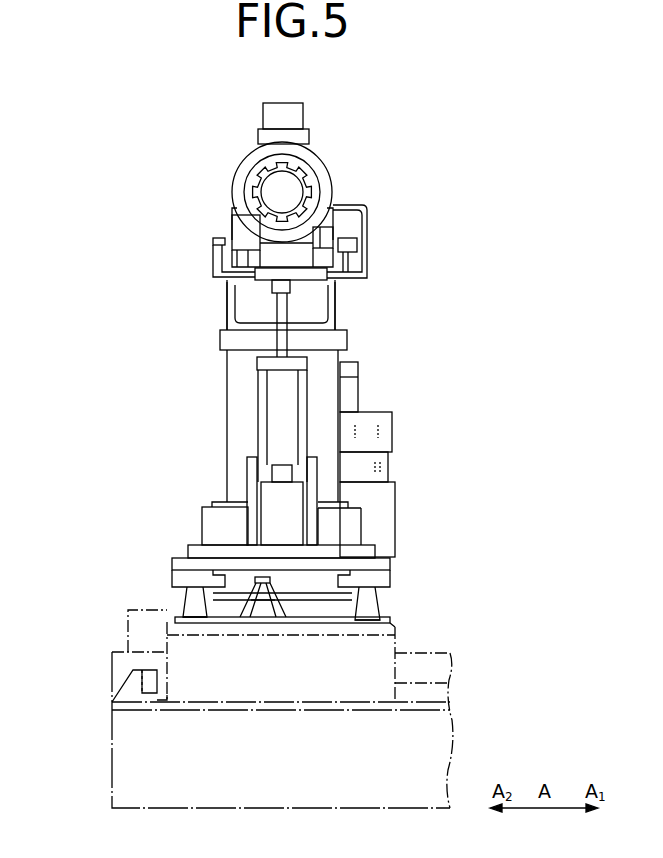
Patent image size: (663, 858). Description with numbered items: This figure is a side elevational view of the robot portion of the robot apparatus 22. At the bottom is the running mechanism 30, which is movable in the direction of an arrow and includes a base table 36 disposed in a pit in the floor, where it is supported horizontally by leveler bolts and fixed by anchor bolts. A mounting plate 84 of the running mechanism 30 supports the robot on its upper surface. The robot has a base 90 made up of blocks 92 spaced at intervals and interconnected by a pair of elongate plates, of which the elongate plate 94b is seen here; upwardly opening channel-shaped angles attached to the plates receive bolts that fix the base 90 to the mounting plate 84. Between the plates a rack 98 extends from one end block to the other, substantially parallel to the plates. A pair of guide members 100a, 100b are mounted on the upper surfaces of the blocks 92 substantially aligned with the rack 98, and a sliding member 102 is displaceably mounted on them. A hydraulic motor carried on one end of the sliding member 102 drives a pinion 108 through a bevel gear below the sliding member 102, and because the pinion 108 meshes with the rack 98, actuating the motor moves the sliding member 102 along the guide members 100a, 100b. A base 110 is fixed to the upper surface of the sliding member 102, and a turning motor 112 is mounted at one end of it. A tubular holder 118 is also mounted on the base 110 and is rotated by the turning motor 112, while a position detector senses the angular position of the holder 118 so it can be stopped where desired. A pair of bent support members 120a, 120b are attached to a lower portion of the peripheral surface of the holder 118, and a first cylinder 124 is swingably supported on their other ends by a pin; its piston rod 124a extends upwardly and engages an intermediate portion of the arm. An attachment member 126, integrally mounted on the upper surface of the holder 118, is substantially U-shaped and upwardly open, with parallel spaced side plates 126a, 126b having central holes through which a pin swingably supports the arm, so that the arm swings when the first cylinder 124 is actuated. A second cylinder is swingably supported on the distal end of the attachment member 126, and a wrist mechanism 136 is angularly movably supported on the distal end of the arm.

The robot apparatus 22 is at (467, 162).
The running mechanism 30 is at (457, 720).
The base table 36 is at (122, 755).
The mounting plate 84 is at (311, 658).
The base 90 is at (395, 600).
The blocks 92 is at (372, 608).
The elongate plate 94b is at (209, 613).
The rack 98 is at (240, 593).
The guide member 100a is at (188, 573).
The guide member 100b is at (372, 579).
The sliding member 102 is at (185, 556).
The pinion 108 is at (287, 593).
The base 110 is at (207, 527).
The turning motor 112 is at (378, 502).
The tubular holder 118 is at (233, 430).
The support member 120a is at (252, 470).
The support member 120b is at (313, 527).
The first cylinder 124 is at (272, 416).
The piston rod 124a is at (342, 345).
The attachment member 126 is at (226, 292).
The side plate 126a is at (230, 308).
The side plate 126b is at (332, 300).
The wrist mechanism 136 is at (331, 182).